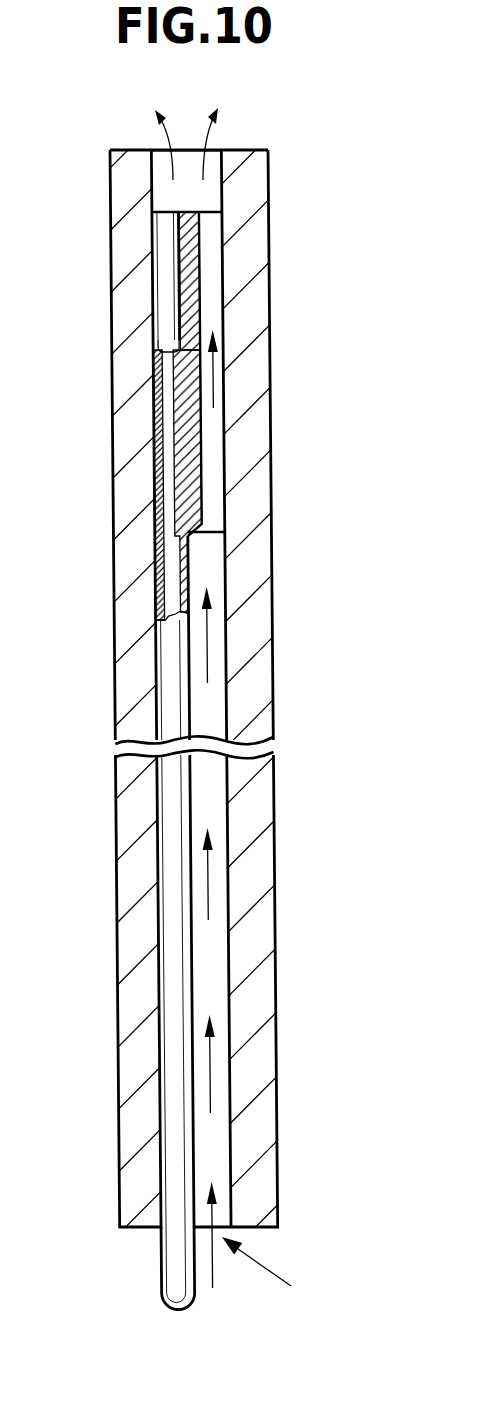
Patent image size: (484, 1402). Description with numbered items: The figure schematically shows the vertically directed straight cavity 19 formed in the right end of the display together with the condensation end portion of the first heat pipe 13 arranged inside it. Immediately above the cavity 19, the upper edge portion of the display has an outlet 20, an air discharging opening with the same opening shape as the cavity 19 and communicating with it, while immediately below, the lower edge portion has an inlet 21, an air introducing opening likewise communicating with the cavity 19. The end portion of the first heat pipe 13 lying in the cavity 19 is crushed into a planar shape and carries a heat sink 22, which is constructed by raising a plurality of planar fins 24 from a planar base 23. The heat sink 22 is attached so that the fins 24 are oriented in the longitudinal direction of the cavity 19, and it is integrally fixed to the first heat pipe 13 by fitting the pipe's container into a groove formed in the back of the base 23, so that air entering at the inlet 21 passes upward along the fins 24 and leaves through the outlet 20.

The first heat pipe 13 is at (167, 925).
The straight cavity 19 is at (231, 939).
The outlet 20 is at (188, 148).
The inlet 21 is at (277, 1274).
The heat sink 22 is at (218, 442).
The planar base 23 is at (192, 485).
The planar fins 24 is at (215, 263).